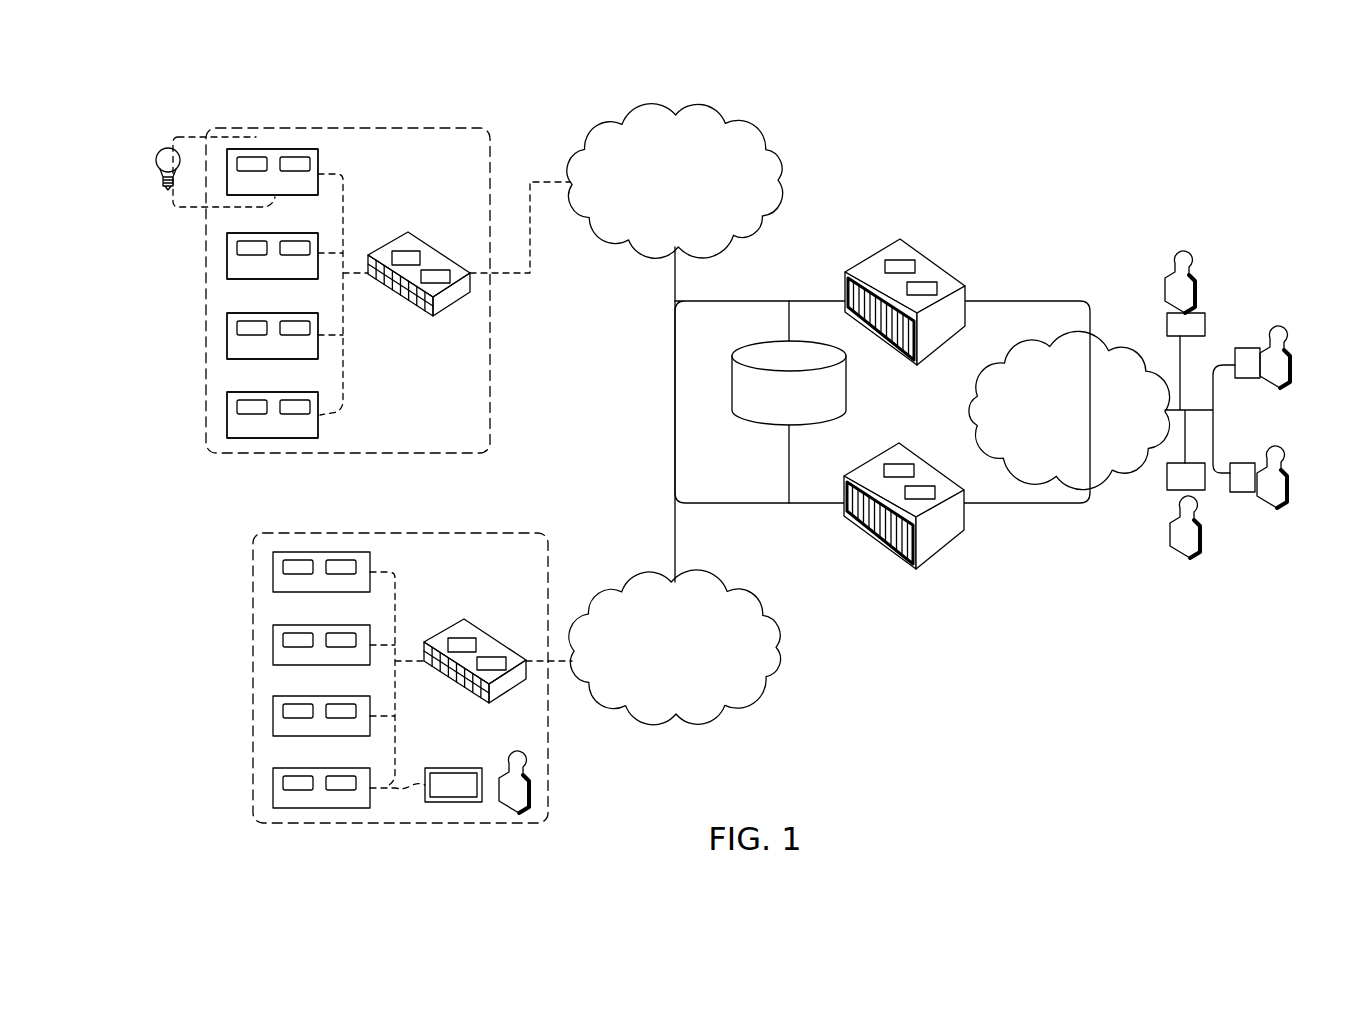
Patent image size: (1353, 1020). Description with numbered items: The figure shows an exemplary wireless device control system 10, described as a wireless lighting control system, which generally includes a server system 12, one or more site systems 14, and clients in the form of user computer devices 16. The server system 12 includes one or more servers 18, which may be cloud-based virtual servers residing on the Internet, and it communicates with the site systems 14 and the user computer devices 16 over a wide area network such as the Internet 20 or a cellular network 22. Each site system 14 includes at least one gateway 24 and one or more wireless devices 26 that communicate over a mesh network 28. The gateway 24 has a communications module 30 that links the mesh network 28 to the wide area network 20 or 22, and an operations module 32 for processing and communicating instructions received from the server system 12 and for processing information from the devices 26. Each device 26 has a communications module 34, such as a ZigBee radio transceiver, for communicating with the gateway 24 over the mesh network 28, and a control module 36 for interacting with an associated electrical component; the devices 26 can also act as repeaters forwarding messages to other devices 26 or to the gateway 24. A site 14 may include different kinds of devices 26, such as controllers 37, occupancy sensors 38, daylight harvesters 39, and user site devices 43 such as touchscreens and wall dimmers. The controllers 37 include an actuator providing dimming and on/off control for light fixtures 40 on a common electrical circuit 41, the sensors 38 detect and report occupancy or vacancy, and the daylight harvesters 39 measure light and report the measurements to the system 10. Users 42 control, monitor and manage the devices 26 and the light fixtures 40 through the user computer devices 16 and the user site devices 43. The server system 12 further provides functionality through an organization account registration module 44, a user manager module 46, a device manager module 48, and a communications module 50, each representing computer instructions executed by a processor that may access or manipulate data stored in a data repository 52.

The wireless device control system 10 is at (1058, 138).
The server system 12 is at (882, 395).
The site system 14 is at (392, 128).
The user computer device 16 is at (1245, 335).
The server 18 is at (931, 254).
The Internet 20 is at (672, 188).
The cellular network 22 is at (664, 656).
The gateway 24 is at (440, 252).
The wireless device 26 is at (318, 165).
The mesh network 28 is at (378, 336).
The communications module 30 is at (401, 252).
The operations module 32 is at (437, 291).
The communications module 34 is at (250, 160).
The control module 36 is at (297, 160).
The controller 37 is at (303, 136).
The sensor 38 is at (213, 341).
The daylight harvester 39 is at (213, 421).
The light fixture 40 is at (158, 176).
The common electrical circuit 41 is at (180, 133).
The user 42 is at (500, 800).
The user site device 43 is at (447, 804).
The organization account registration module 44 is at (895, 262).
The user manager module 46 is at (933, 289).
The device manager module 48 is at (893, 466).
The communications module 50 is at (925, 488).
The data repository 52 is at (777, 406).